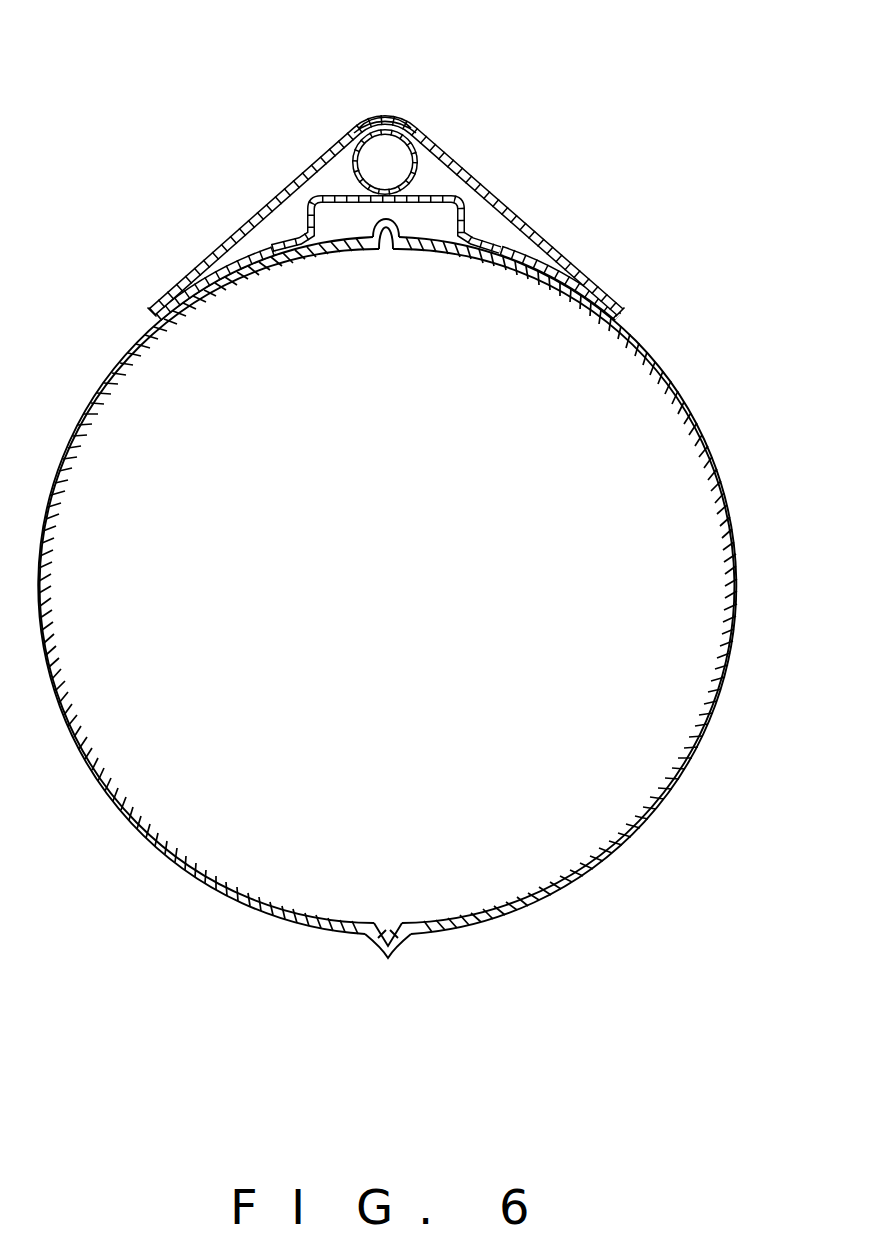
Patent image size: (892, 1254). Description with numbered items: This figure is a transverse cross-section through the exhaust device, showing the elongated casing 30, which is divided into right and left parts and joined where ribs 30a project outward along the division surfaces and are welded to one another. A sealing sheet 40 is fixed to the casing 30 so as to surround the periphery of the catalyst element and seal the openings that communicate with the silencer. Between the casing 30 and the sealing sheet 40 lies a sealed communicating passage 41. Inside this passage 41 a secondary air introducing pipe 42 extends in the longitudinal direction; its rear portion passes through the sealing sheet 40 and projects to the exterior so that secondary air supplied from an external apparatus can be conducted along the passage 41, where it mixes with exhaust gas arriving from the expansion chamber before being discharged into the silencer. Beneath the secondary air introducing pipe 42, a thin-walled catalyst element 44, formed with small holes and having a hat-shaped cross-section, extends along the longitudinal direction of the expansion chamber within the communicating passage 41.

The casing 30 is at (485, 926).
The ribs 30a is at (392, 242).
The sealing sheet 40 is at (257, 208).
The communicating passage 41 is at (440, 225).
The secondary air introducing pipe 42 is at (358, 163).
The thin-walled catalyst element 44 is at (322, 160).